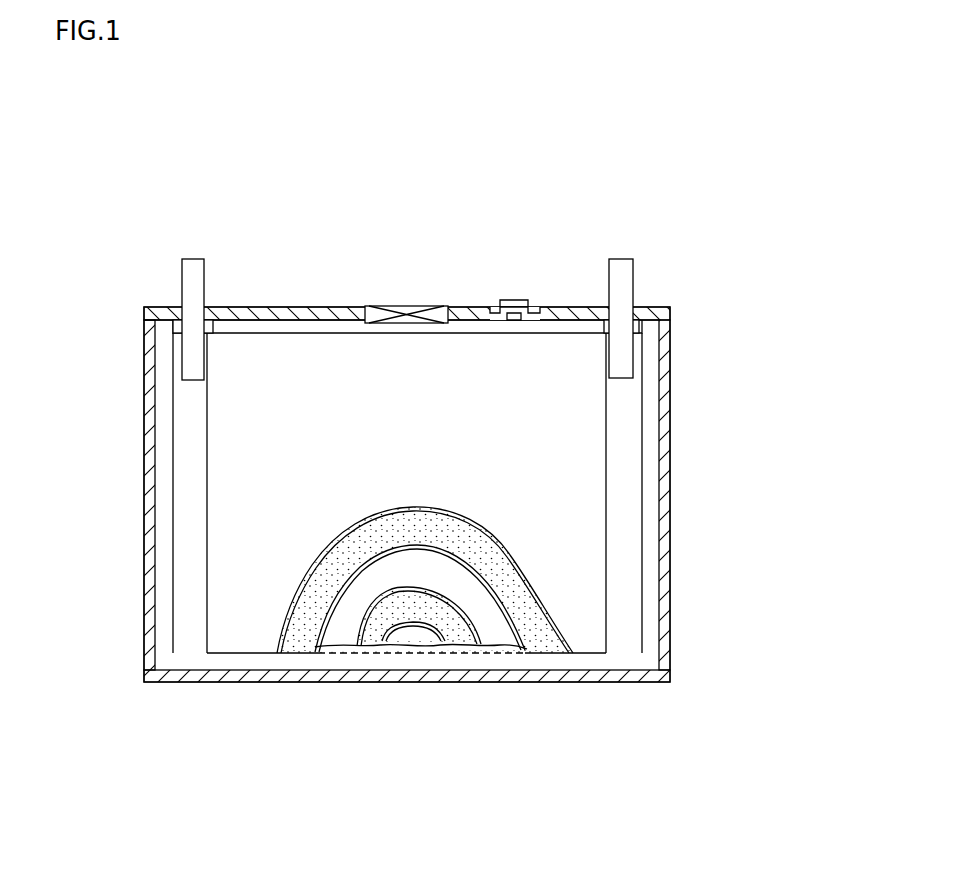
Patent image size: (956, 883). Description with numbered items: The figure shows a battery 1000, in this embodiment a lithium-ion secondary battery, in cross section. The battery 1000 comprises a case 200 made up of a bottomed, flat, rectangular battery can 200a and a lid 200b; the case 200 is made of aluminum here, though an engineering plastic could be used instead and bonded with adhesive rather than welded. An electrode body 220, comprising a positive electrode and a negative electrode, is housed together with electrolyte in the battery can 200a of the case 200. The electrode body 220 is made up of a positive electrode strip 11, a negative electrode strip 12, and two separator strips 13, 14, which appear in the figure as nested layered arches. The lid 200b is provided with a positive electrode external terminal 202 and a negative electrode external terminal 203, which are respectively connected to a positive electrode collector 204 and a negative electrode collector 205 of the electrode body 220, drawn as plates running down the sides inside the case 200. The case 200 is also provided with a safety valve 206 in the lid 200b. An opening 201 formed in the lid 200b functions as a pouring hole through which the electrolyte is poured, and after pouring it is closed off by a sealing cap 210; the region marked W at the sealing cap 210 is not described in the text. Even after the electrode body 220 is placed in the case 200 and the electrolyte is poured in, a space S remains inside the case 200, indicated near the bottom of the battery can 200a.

The battery 1000 is at (713, 287).
The case 200 is at (479, 426).
The battery can 200a is at (670, 583).
The lid 200b is at (245, 307).
The opening 201 is at (512, 321).
The positive electrode external terminal 202 is at (192, 259).
The negative electrode external terminal 203 is at (623, 259).
The positive electrode collector 204 is at (192, 505).
The negative electrode collector 205 is at (622, 525).
The safety valve 206 is at (413, 306).
The sealing cap 210 is at (533, 300).
The electrode body 220 is at (313, 368).
The weld portion W is at (540, 301).
The space S is at (650, 645).
The positive electrode strip 11 is at (303, 640).
The negative electrode strip 12 is at (372, 640).
The separator strip 13 is at (252, 577).
The separator strip 14 is at (342, 638).